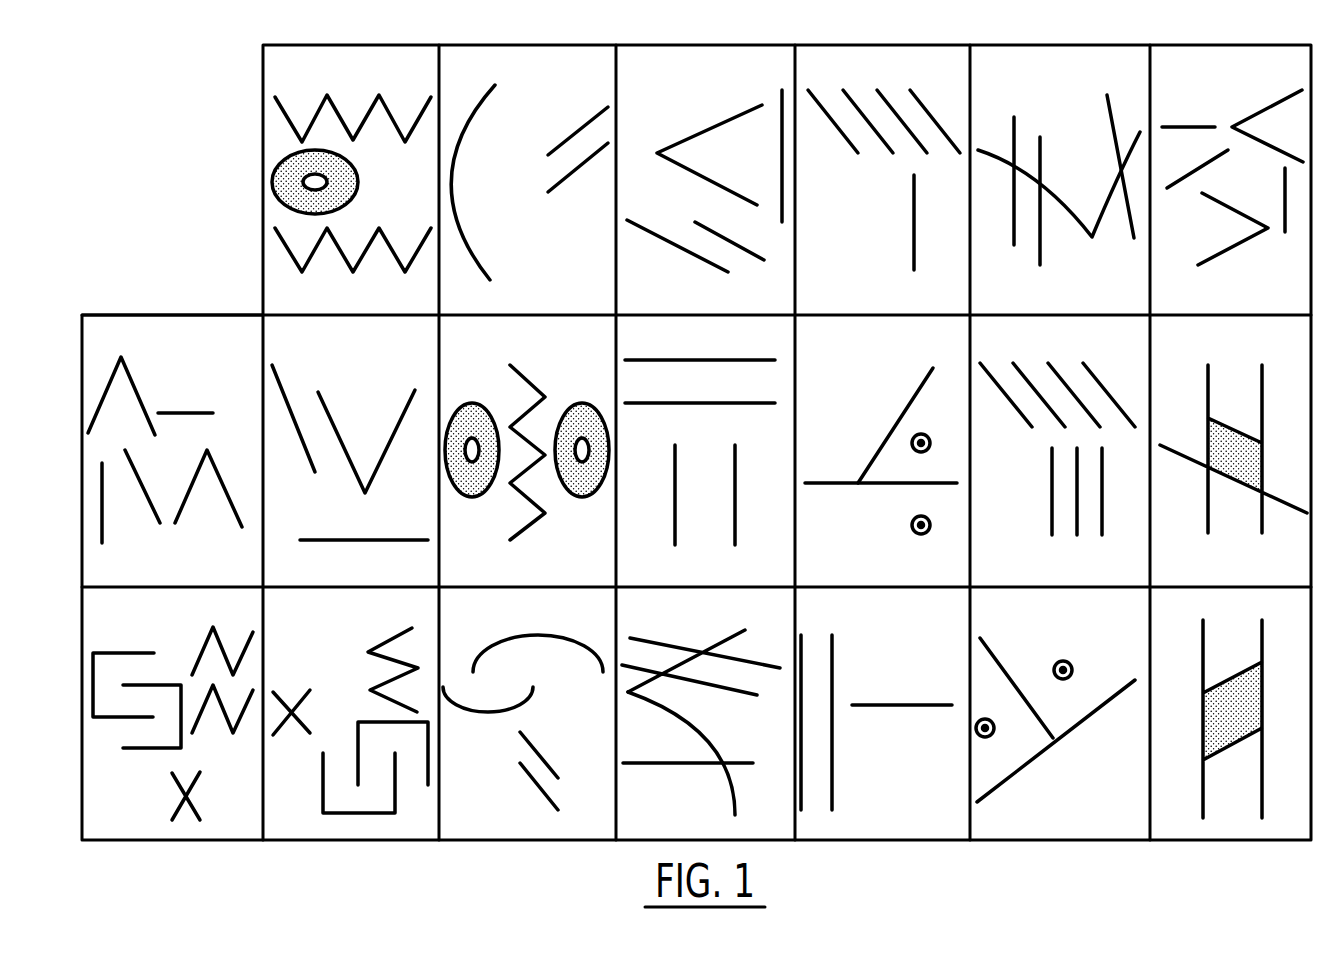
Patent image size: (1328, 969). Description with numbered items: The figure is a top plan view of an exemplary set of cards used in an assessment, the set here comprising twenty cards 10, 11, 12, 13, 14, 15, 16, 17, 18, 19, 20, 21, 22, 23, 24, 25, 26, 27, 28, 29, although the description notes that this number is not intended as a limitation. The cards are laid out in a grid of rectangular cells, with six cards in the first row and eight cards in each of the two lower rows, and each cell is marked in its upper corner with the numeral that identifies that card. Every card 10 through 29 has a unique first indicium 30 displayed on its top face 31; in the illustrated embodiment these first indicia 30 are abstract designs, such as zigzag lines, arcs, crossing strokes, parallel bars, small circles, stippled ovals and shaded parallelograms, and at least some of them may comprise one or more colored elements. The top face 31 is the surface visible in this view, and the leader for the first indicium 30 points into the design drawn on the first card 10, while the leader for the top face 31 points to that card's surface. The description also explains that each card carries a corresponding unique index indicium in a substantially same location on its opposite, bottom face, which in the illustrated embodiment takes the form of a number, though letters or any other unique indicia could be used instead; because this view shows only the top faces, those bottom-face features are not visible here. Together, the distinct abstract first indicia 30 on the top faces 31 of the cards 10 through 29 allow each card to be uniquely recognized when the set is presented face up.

The card 10 is at (402, 78).
The card 11 is at (579, 78).
The card 12 is at (758, 78).
The card 13 is at (933, 78).
The card 14 is at (1113, 78).
The card 15 is at (1274, 78).
The card 16 is at (221, 349).
The card 17 is at (402, 349).
The card 18 is at (579, 349).
The card 19 is at (758, 349).
The card 20 is at (933, 349).
The card 21 is at (1113, 349).
The card 22 is at (1274, 349).
The card 23 is at (221, 622).
The card 24 is at (402, 622).
The card 25 is at (579, 622).
The card 26 is at (758, 622).
The card 27 is at (933, 622).
The card 28 is at (1113, 622).
The card 29 is at (1274, 622).
The first indicium 30 is at (349, 56).
The top face 31 is at (277, 297).